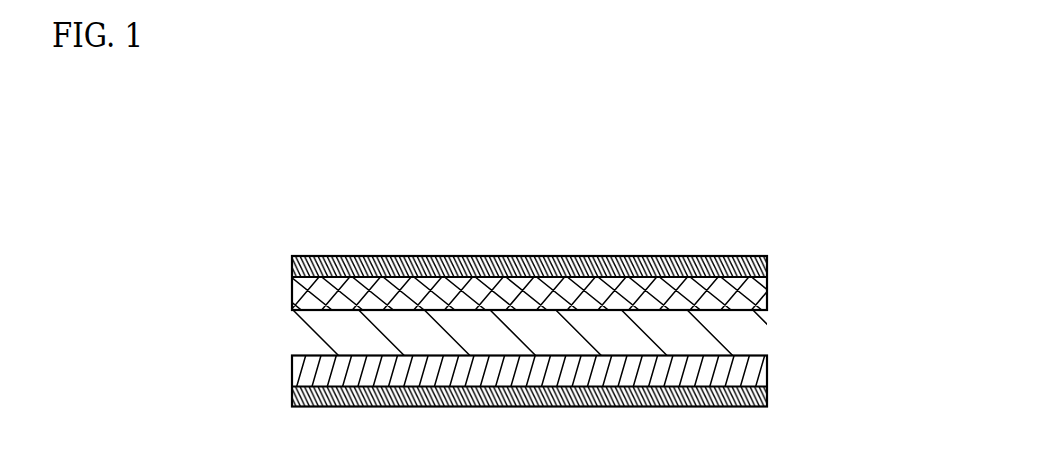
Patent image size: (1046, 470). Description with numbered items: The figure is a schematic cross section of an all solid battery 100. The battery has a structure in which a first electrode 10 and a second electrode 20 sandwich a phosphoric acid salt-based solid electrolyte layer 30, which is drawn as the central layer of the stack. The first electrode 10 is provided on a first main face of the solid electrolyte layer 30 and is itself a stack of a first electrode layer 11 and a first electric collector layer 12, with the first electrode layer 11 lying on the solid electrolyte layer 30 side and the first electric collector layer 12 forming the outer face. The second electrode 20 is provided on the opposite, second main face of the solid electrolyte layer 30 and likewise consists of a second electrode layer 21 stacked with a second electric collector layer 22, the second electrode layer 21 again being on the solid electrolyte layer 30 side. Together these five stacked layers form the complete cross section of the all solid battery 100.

The all solid battery 100 is at (948, 168).
The first electrode 10 is at (870, 350).
The first electrode layer 11 is at (767, 363).
The first electric collector layer 12 is at (767, 397).
The second electrode 20 is at (870, 238).
The second electrode layer 21 is at (767, 293).
The second electric collector layer 22 is at (767, 258).
The solid electrolyte layer 30 is at (303, 346).